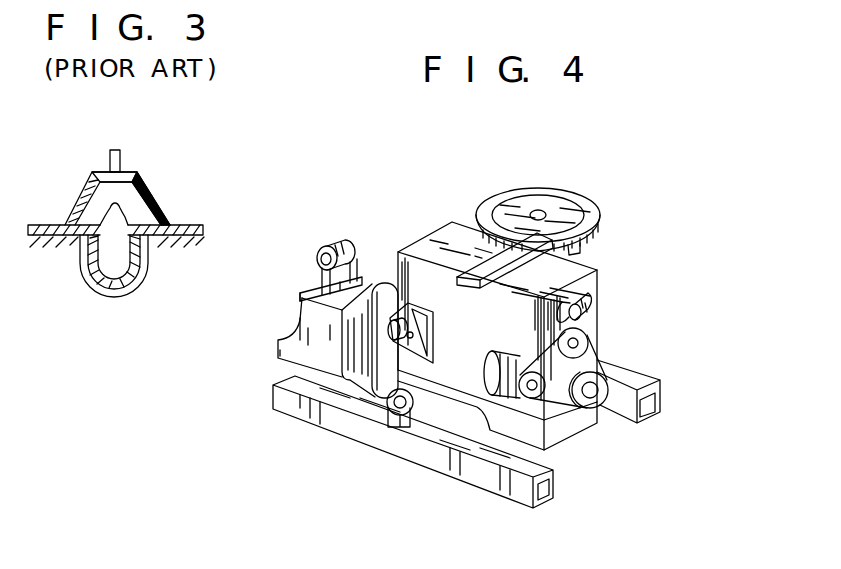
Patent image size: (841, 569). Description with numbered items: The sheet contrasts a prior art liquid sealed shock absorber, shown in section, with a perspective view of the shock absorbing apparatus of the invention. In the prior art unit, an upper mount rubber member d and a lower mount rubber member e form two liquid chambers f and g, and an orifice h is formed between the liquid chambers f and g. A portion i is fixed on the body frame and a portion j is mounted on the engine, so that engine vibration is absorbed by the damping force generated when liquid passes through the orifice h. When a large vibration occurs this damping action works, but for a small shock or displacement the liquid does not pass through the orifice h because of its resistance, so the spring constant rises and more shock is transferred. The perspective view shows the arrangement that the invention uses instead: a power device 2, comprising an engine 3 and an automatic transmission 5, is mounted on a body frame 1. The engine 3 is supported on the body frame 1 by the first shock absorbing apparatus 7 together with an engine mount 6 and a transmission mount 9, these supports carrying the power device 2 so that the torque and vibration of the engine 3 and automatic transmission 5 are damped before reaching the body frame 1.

In FIG. 4, the body frame 1 is at (387, 443).
In FIG. 4, the power device 2 is at (600, 280).
In FIG. 4, the engine 3 is at (447, 228).
In FIG. 4, the automatic transmission 5 is at (295, 353).
In FIG. 4, the engine mount 6 is at (595, 308).
In FIG. 4, the first shock absorbing apparatus 7 is at (391, 342).
In FIG. 4, the transmission mount 9 is at (350, 242).
In FIG. 3, the portion mounted on the engine j is at (118, 149).
In FIG. 3, the liquid chamber f is at (132, 195).
In FIG. 3, the upper mount rubber member d is at (158, 197).
In FIG. 3, the orifice h is at (116, 212).
In FIG. 3, the portion fixed on the body frame i is at (58, 236).
In FIG. 3, the lower mount rubber member e is at (137, 270).
In FIG. 3, the liquid chamber g is at (118, 274).